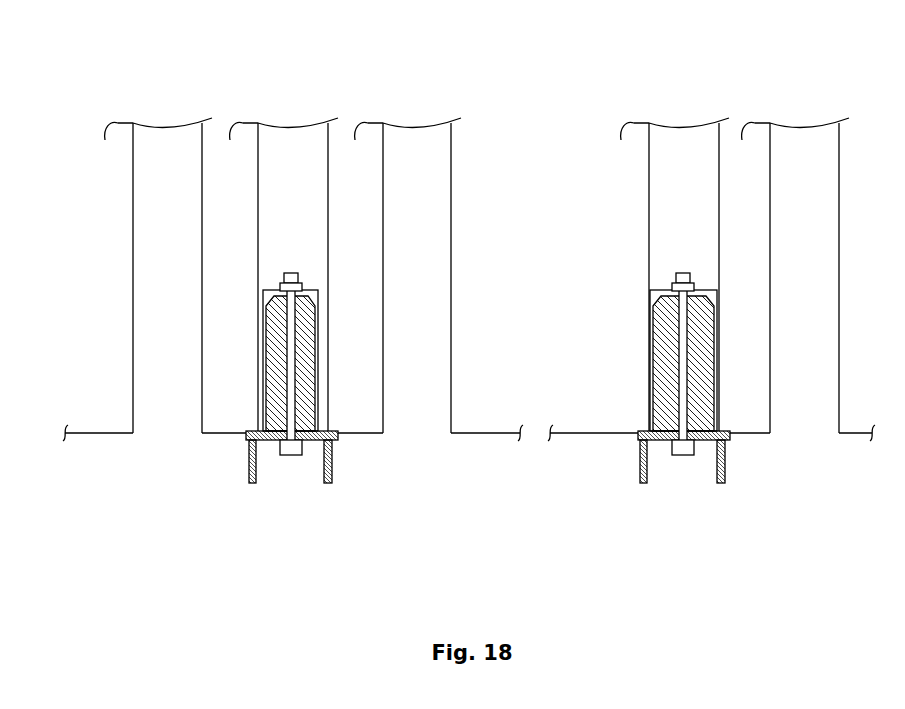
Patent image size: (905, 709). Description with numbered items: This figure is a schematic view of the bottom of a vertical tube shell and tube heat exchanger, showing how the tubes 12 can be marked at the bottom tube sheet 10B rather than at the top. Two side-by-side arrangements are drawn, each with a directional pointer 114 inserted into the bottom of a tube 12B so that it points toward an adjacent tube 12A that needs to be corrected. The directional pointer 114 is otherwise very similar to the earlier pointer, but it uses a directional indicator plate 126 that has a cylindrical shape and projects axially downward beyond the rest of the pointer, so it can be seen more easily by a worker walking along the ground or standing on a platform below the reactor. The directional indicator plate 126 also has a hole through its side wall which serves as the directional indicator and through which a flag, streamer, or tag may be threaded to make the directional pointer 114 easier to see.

The tubes 12 is at (133, 176).
The adjacent tubes 12A is at (383, 203).
The tubes 12B is at (258, 187).
The bottom tube sheet 10B is at (103, 434).
The directional pointer 114 is at (453, 405).
The directional indicator plate 126 is at (333, 477).